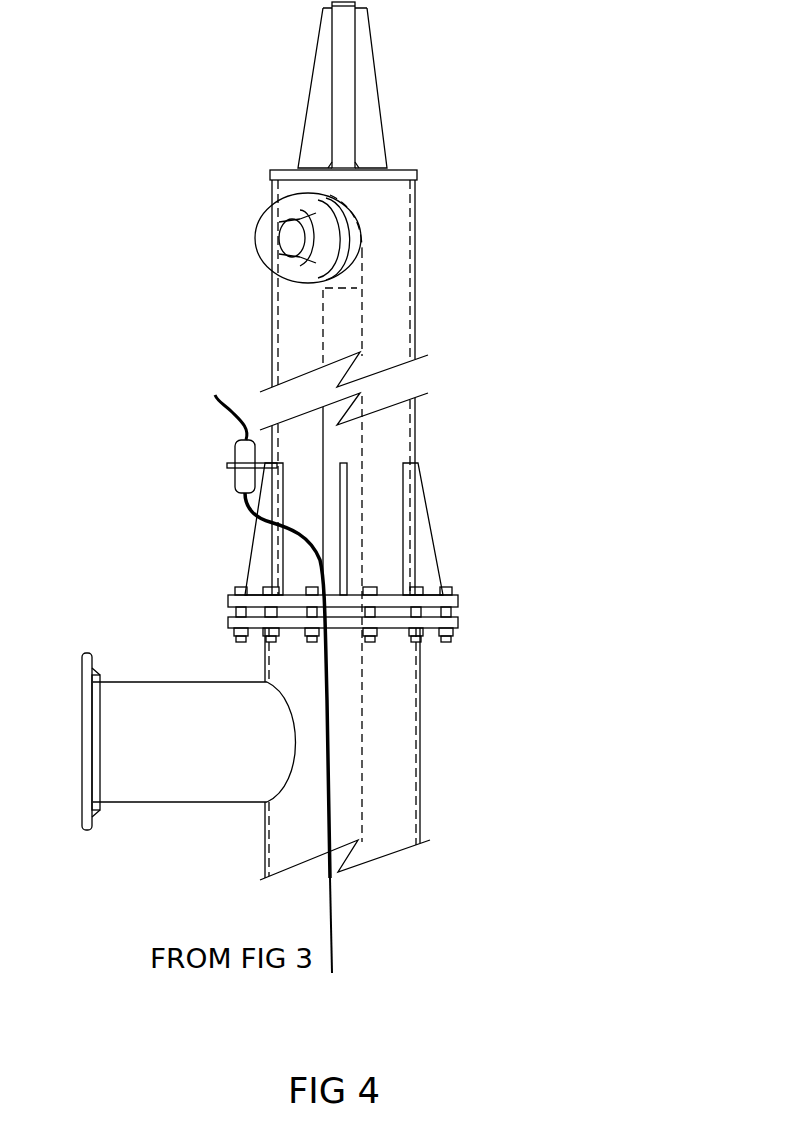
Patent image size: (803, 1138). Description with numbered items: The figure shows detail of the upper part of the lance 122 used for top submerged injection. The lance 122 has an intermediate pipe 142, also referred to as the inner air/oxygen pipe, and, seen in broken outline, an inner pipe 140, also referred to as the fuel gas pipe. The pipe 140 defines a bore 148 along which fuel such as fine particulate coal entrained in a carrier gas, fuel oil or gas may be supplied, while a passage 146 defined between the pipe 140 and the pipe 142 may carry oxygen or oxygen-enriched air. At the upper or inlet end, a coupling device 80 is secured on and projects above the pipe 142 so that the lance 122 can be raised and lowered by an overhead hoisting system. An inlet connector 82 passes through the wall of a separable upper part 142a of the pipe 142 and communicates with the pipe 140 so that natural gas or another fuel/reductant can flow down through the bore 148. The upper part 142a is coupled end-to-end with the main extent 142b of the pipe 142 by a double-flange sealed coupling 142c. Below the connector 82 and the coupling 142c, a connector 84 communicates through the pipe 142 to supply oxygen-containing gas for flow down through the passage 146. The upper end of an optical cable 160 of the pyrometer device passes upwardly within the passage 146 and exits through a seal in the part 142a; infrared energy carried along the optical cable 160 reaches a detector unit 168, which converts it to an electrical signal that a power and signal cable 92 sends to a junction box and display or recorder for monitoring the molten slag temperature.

The coupling device 80 is at (368, 103).
The lance 122 is at (442, 141).
The inlet connector 82 is at (342, 212).
The intermediate pipe 142 is at (415, 273).
The separable upper part of pipe 142 142a is at (273, 327).
The main extent of pipe 142 142b is at (418, 702).
The double-flange sealed coupling 142c is at (480, 593).
The inner pipe 140 is at (365, 320).
The bore 148 is at (347, 346).
The passage 146 is at (387, 443).
The power and signal cable 92 is at (234, 435).
The detector unit 168 is at (243, 478).
The connector 84 is at (167, 717).
The optical cable 160 is at (333, 895).